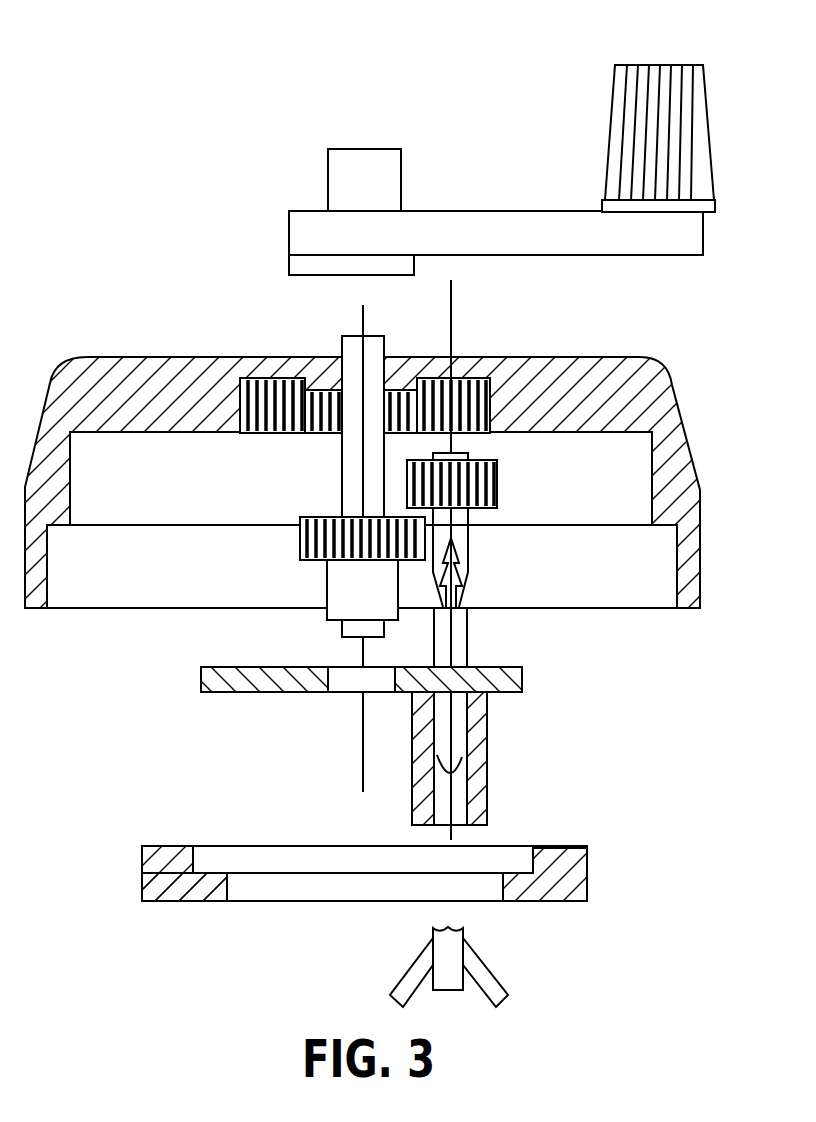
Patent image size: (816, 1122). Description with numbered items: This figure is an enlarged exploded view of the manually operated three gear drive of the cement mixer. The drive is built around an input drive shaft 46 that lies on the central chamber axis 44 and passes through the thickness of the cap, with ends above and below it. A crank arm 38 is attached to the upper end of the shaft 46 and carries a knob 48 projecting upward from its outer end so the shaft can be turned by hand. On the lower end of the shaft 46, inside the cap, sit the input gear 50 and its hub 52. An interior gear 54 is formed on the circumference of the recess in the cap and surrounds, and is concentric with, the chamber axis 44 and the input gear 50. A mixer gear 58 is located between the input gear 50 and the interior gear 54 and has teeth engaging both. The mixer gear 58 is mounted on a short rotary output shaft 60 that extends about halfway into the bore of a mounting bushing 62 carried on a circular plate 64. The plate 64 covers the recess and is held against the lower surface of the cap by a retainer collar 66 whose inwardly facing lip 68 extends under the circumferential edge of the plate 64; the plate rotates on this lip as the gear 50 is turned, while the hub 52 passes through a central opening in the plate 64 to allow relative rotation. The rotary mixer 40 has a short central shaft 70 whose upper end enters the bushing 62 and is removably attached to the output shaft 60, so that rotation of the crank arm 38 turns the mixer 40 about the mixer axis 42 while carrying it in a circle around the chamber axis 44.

The crank arm 38 is at (480, 211).
The mixer 40 is at (505, 974).
The mixer axis 42 is at (452, 308).
The central chamber axis 44 is at (363, 318).
The input drive shaft 46 is at (342, 336).
The knob 48 is at (672, 65).
The input gear 50 is at (298, 537).
The hub 52 is at (337, 597).
The interior gear 54 is at (235, 400).
The mixer gear 58 is at (497, 498).
The rotary output shaft 60 is at (460, 543).
The mounting bushing 62 is at (478, 747).
The circular plate 64 is at (522, 673).
The retainer collar 66 is at (153, 863).
The inwardly facing lip 68 is at (185, 890).
The central shaft 70 is at (470, 770).